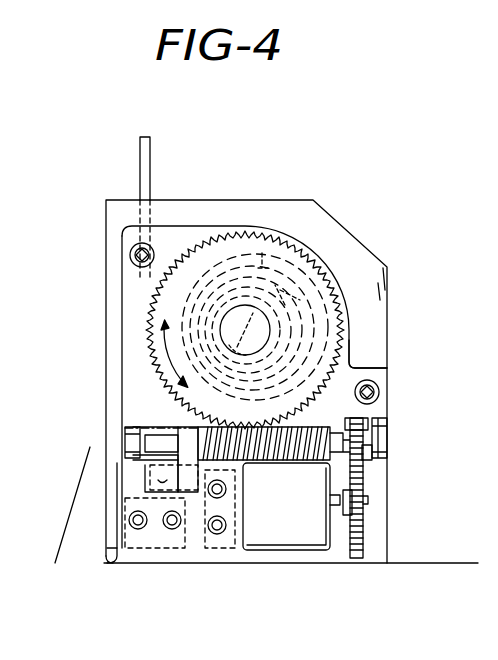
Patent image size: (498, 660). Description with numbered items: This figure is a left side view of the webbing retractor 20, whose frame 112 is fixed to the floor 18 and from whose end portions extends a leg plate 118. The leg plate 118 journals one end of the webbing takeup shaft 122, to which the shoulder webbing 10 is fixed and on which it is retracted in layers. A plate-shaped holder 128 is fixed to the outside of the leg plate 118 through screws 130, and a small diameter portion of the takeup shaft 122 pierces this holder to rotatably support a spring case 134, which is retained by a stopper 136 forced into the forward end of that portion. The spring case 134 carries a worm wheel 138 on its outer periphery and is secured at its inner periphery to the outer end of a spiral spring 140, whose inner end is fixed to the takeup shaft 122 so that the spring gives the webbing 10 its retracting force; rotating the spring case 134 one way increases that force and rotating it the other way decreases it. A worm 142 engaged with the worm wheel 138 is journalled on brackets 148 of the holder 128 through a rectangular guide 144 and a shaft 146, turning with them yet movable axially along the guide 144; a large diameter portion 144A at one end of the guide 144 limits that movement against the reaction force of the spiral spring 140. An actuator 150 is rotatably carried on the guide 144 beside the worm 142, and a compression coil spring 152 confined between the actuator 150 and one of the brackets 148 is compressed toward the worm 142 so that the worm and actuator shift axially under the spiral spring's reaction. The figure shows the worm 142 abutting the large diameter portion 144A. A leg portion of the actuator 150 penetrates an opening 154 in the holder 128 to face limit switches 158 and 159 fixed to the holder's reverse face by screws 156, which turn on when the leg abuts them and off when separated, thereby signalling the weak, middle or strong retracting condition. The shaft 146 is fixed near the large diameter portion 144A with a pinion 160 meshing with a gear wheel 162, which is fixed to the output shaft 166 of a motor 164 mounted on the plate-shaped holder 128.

The shoulder webbing 10 is at (151, 163).
The floor 18 is at (427, 563).
The webbing retractor 20 is at (345, 210).
The frame 112 is at (110, 565).
The leg plate 118 is at (350, 246).
The webbing takeup shaft 122 is at (292, 272).
The plate-shaped holder 128 is at (127, 377).
The screws 130 is at (131, 250).
The spring case 134 is at (150, 335).
The stopper 136 is at (273, 327).
The worm wheel 138 is at (203, 242).
The spiral spring 140 is at (262, 253).
The worm 142 is at (295, 461).
The guide 144 is at (125, 455).
The large diameter portion 144A is at (352, 366).
The shaft 146 is at (370, 452).
The brackets 148 is at (128, 443).
The actuator 150 is at (185, 417).
The compression coil spring 152 is at (140, 421).
The opening 154 is at (150, 483).
The screws 156 is at (212, 567).
The limit switch 158 is at (150, 557).
The limit switch 159 is at (222, 560).
The pinion 160 is at (362, 465).
The gear wheel 162 is at (360, 565).
The motor 164 is at (300, 551).
The output shaft 166 is at (368, 500).